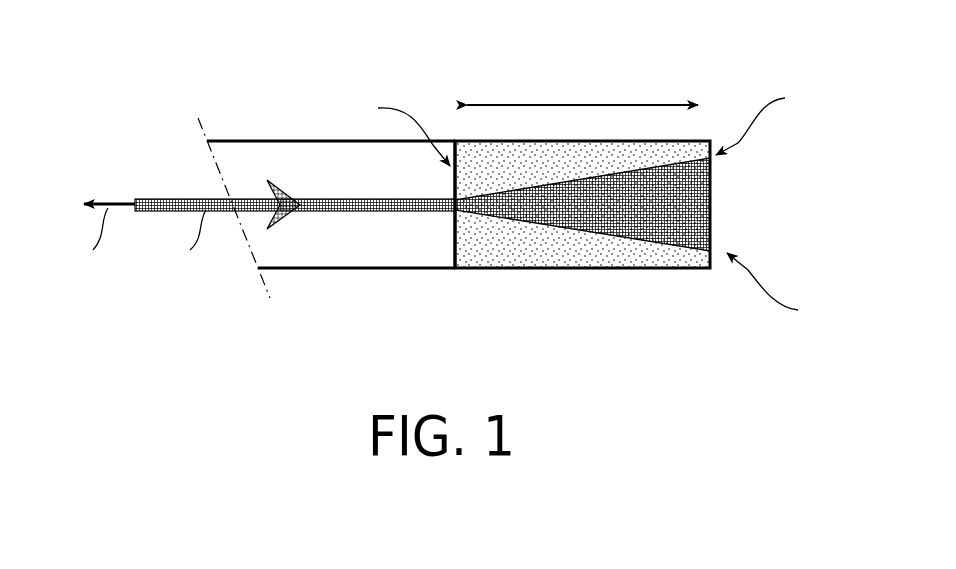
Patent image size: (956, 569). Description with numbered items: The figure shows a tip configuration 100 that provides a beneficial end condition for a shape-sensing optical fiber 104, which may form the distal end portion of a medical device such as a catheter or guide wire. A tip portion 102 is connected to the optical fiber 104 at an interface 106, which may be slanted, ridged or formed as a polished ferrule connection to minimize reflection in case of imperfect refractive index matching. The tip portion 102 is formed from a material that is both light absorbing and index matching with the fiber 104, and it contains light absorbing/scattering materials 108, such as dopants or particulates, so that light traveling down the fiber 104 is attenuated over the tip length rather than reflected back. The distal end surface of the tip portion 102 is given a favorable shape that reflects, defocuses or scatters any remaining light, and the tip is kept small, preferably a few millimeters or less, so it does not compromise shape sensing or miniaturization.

The tip configuration 100 is at (112, 76).
The tip portion 102 is at (590, 281).
The optical fiber 104 is at (355, 281).
The interface 106 is at (455, 268).
The light absorbing/scattering materials 108 is at (538, 255).